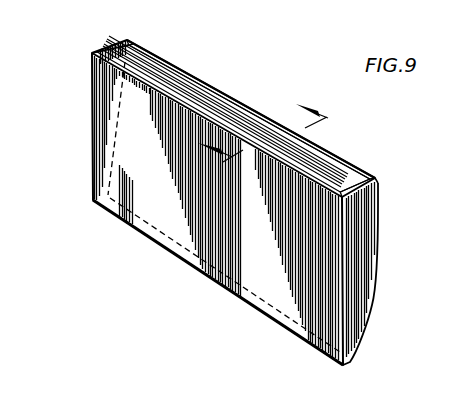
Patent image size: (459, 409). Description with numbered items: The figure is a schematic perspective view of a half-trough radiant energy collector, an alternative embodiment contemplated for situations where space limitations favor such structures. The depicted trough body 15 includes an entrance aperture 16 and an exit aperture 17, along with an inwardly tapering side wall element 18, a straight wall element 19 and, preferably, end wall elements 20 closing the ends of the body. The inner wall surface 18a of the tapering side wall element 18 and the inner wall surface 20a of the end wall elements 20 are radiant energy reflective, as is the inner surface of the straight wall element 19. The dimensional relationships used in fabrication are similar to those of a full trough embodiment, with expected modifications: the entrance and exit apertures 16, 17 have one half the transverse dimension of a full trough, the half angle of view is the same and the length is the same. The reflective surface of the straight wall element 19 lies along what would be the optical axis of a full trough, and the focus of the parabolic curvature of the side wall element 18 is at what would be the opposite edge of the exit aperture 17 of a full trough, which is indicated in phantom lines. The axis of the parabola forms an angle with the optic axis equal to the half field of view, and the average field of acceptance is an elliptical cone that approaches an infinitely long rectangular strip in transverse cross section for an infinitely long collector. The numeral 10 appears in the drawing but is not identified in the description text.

The viewing direction arrows 10 is at (274, 144).
The trough body 15 is at (377, 230).
The entrance aperture 16 is at (352, 178).
The exit aperture 17 is at (185, 263).
The inwardly tapering side wall element 18 is at (246, 107).
The inner wall surface 18a is at (302, 163).
The straight wall element 19 is at (111, 61).
The end wall element 20 is at (106, 46).
The inner wall surface 20a is at (137, 46).